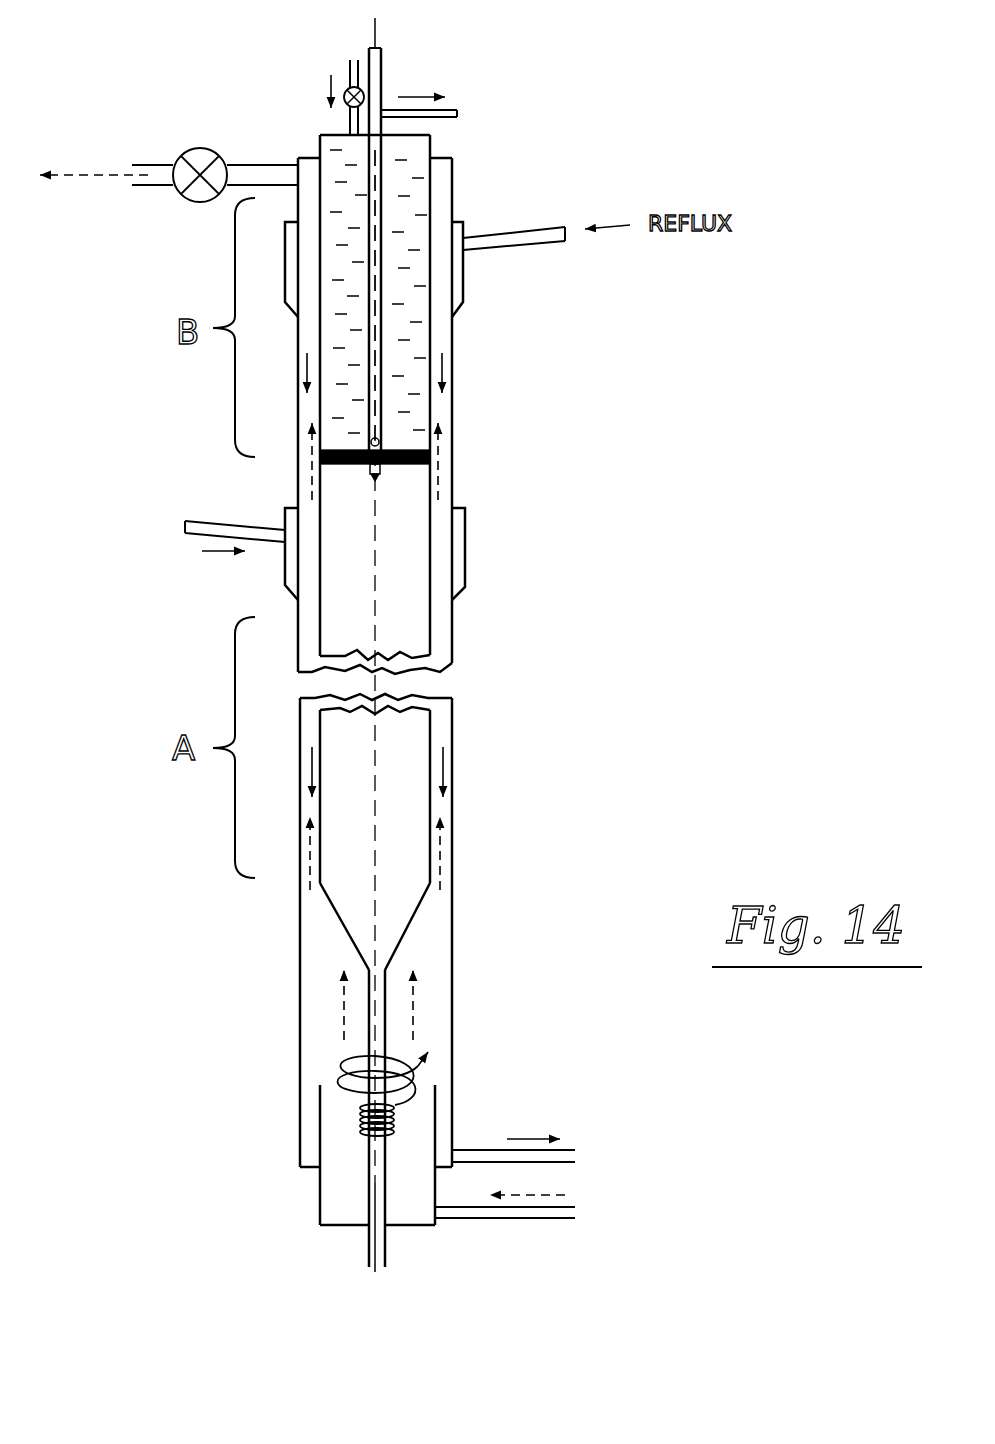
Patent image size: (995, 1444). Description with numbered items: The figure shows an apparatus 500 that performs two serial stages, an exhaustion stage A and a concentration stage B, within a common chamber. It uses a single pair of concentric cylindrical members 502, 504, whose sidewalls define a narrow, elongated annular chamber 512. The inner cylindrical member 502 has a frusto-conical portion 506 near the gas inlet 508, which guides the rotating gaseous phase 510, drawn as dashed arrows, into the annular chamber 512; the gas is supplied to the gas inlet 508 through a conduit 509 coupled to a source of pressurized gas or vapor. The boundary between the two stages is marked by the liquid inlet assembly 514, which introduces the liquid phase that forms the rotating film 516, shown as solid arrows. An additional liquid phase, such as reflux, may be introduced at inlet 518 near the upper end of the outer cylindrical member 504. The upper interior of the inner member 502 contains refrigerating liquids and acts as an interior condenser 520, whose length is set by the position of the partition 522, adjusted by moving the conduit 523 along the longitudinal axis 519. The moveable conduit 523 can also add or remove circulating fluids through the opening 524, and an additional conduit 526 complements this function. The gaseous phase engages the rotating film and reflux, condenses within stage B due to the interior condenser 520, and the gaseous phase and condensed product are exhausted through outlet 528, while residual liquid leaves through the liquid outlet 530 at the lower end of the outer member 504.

The apparatus 500 is at (568, 695).
The inner cylindrical member 502 is at (432, 732).
The outer cylindrical member 504 is at (455, 948).
The frusto-conical portion 506 is at (337, 913).
The gas inlet 508 is at (320, 1205).
The conduit 509 is at (490, 1220).
The rotating gaseous phase 510 is at (435, 452).
The annular chamber 512 is at (444, 640).
The liquid inlet assembly 514 is at (465, 540).
The rotating film of the liquid phase 516 is at (445, 770).
The inlet 518 is at (465, 280).
The longitudinal axis 519 is at (377, 35).
The interior condenser 520 is at (418, 213).
The partition 522 is at (340, 465).
The moveable conduit 523 is at (377, 158).
The opening 524 is at (380, 440).
The additional conduit 526 is at (350, 78).
The outlet 528 is at (298, 172).
The liquid outlet 530 is at (457, 1150).